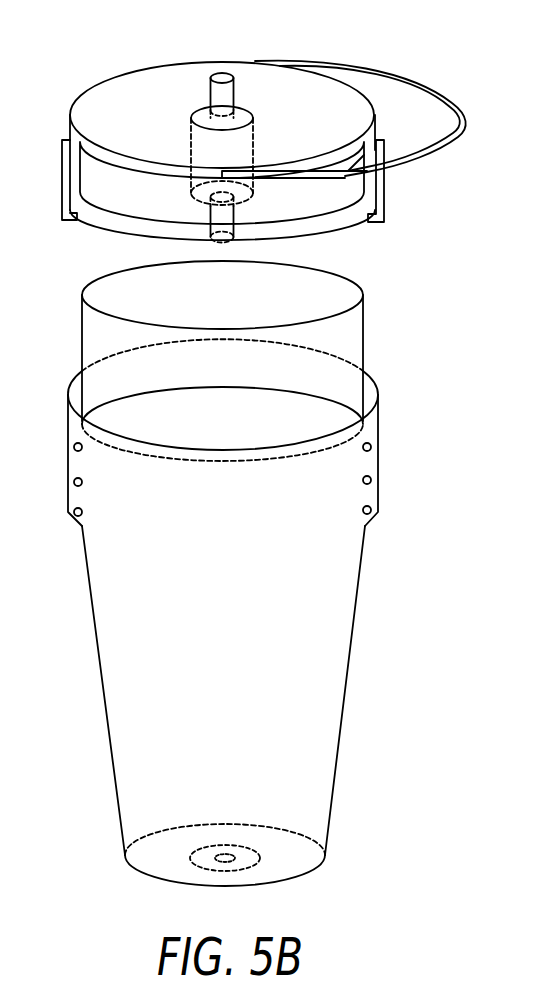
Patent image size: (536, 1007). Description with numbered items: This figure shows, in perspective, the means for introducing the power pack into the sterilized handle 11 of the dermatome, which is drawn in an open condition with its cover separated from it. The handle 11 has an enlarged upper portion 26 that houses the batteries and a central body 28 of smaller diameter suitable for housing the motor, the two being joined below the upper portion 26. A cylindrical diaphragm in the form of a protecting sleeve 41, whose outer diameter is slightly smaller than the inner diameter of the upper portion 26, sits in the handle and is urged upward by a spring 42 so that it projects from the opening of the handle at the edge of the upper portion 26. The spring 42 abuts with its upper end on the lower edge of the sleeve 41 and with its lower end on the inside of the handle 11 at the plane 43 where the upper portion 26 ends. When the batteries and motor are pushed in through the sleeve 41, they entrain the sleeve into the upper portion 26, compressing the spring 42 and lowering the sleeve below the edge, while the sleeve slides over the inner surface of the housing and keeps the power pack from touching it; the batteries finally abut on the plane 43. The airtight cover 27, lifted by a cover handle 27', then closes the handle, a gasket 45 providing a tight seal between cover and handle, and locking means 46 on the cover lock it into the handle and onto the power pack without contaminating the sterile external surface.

The handle 11 is at (259, 612).
The enlarged upper portion 26 is at (378, 427).
The airtight cover 27 is at (334, 185).
The cover handle 27' is at (376, 100).
The central body 28 is at (307, 775).
The protecting sleeve 41 is at (352, 337).
The spring 42 is at (371, 482).
The plane 43 is at (370, 512).
The gasket 45 is at (378, 222).
The locking means 46 is at (221, 97).